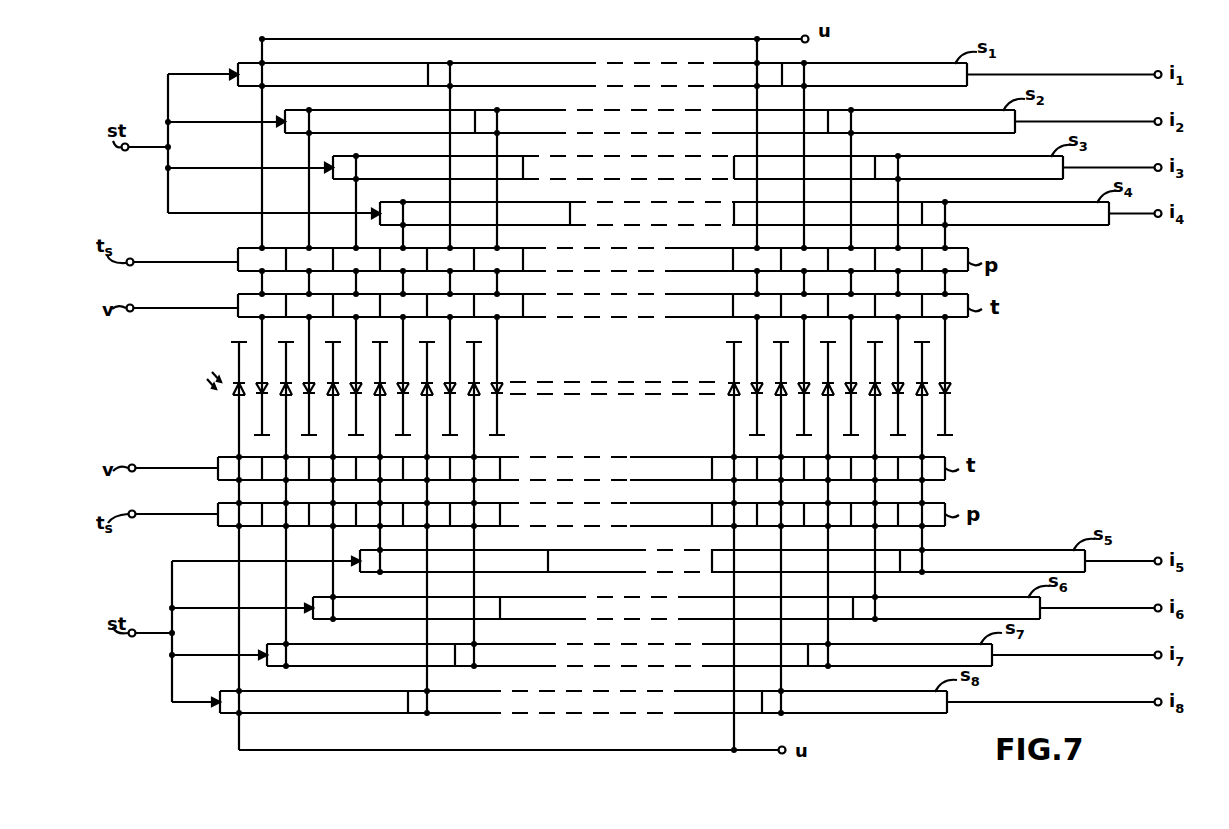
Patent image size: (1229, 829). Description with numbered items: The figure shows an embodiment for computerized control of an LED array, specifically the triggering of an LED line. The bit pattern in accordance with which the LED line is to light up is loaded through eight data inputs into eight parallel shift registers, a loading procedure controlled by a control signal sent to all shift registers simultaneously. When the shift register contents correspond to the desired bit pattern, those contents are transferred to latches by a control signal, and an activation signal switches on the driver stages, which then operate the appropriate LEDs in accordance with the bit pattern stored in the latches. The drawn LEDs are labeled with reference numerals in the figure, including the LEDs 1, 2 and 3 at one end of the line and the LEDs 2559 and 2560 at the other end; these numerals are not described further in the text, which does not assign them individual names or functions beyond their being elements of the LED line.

The photodiode 1 is at (237, 391).
The diode 2 is at (262, 383).
The diode 3 is at (284, 394).
The diode 2559 is at (926, 394).
The diode 2560 is at (948, 386).